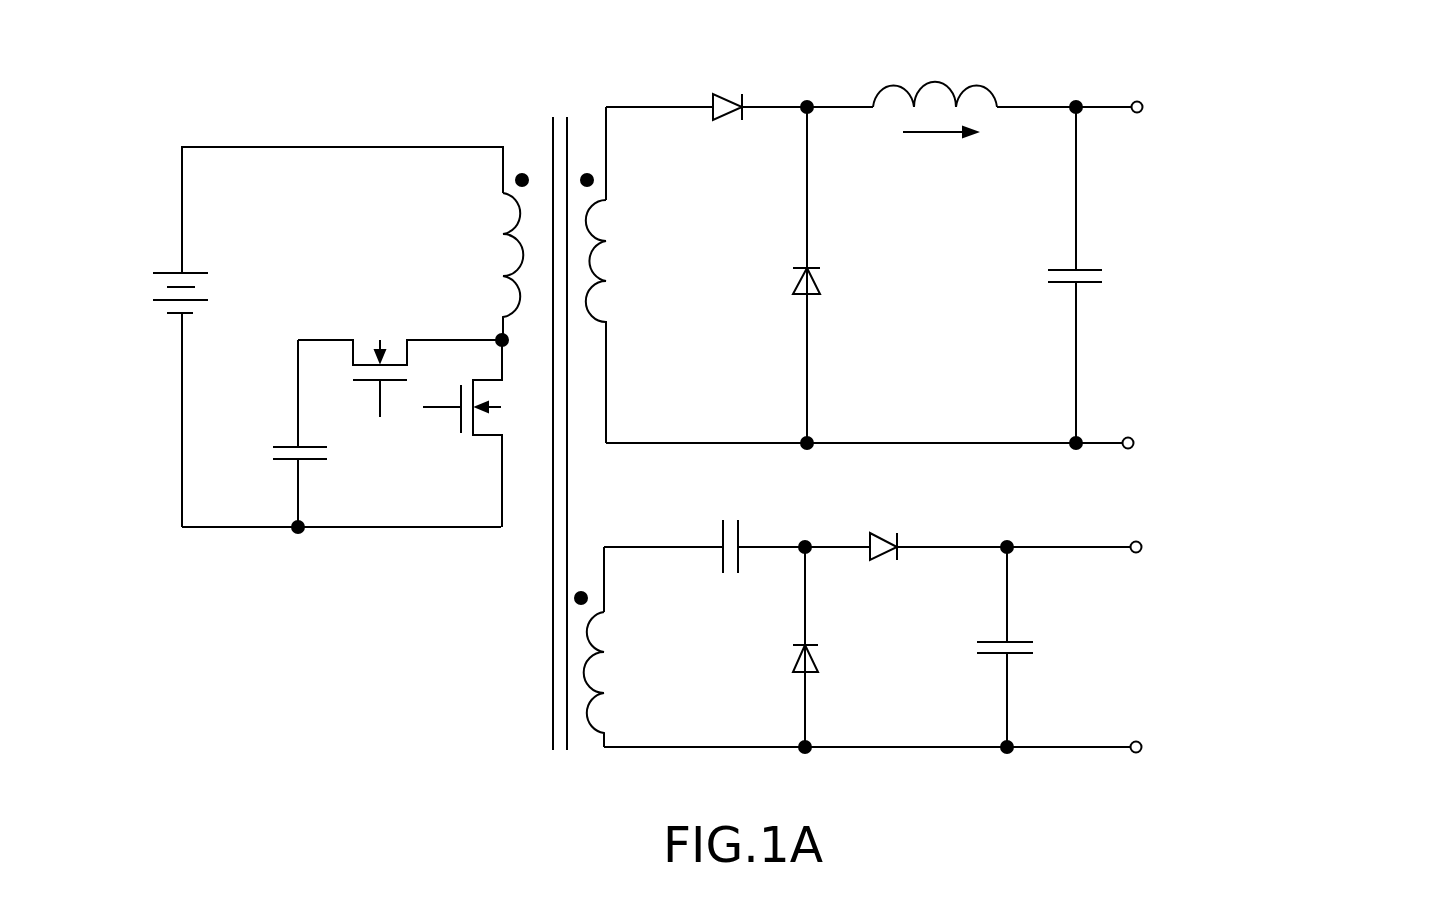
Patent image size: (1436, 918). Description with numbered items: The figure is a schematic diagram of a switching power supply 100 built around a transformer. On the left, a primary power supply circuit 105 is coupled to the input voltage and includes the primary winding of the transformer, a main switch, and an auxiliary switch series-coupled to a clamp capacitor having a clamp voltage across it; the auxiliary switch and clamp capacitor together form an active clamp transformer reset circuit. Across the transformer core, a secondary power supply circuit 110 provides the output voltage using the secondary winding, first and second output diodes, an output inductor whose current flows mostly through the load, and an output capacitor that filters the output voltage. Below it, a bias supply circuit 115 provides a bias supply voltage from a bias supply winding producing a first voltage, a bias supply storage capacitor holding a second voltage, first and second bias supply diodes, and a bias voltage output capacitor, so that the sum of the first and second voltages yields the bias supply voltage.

The switching power supply 100 is at (1306, 126).
The primary power supply circuit 105 is at (236, 99).
The secondary power supply circuit 110 is at (1045, 76).
The bias supply circuit 115 is at (1135, 513).